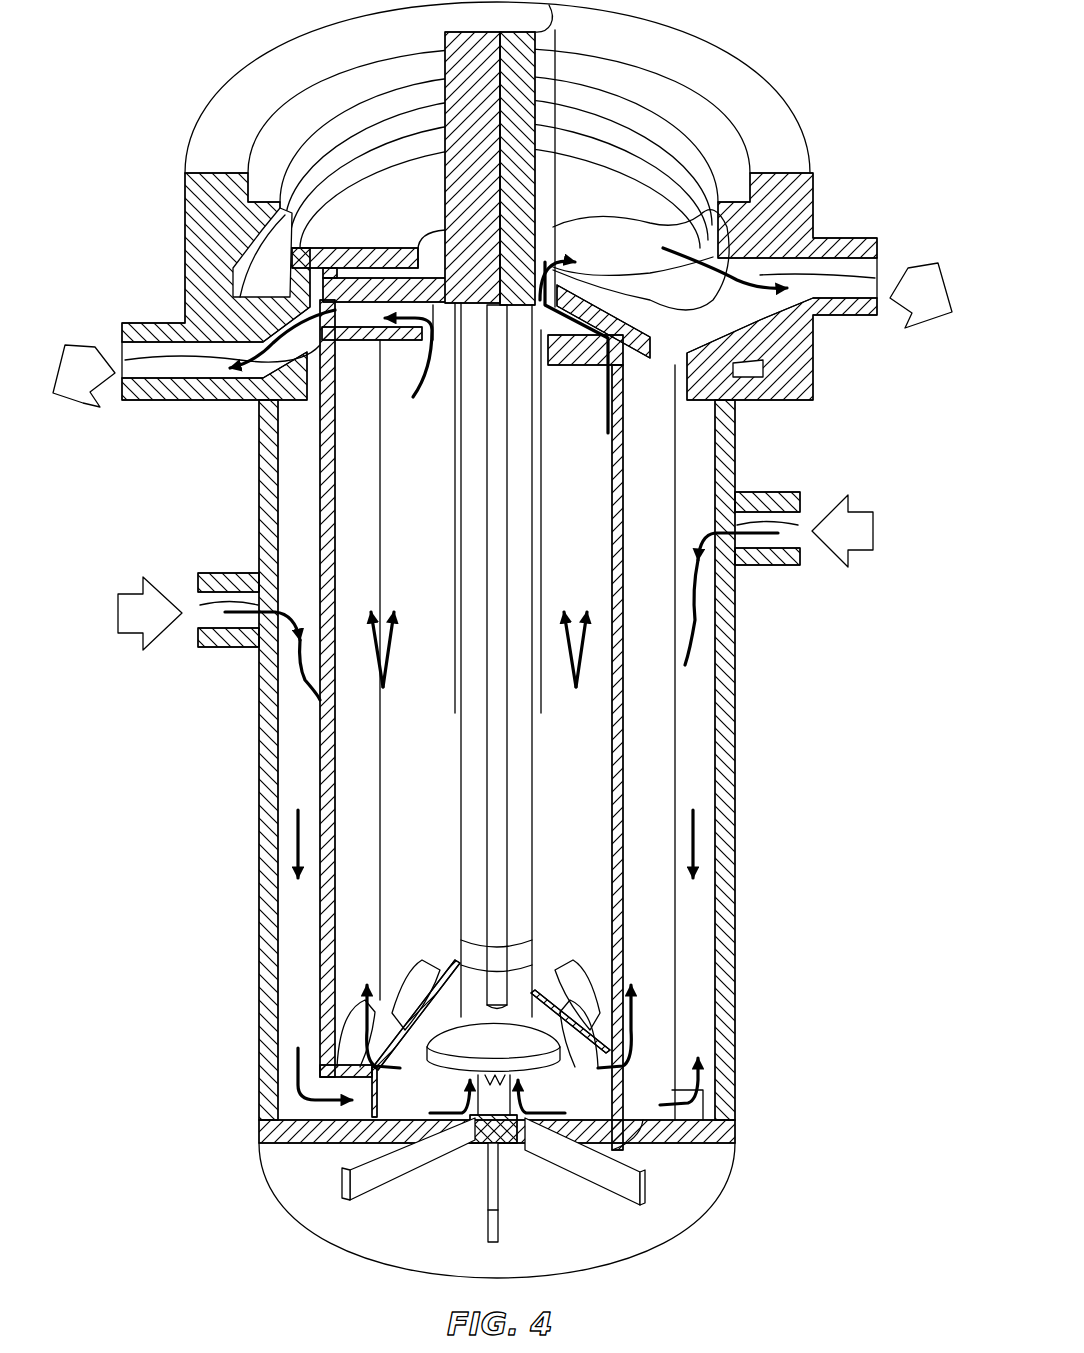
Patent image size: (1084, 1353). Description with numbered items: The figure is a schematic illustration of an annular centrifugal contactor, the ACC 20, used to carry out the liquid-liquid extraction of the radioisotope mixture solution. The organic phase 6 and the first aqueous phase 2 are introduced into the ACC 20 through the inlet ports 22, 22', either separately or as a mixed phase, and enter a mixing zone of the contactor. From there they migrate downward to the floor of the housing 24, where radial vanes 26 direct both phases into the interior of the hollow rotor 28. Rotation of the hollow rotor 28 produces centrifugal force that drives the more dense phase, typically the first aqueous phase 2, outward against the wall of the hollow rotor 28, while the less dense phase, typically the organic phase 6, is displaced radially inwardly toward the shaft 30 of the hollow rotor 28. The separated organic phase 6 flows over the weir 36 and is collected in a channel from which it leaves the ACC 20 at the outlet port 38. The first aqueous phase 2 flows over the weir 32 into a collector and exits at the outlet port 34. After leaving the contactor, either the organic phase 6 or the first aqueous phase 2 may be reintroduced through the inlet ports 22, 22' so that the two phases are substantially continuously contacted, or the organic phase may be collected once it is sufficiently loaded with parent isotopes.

The annular centrifugal contactor 20 is at (845, 82).
The inlet port 22 is at (228, 650).
The inlet port 22' is at (779, 586).
The housing 24 is at (258, 930).
The radial vanes 26 is at (640, 1182).
The hollow rotor 28 is at (510, 1022).
The shaft 30 is at (500, 791).
The weir 32 is at (785, 345).
The outlet port 34 is at (848, 272).
The weir 36 is at (415, 335).
The outlet port 38 is at (172, 372).
The first aqueous phase 2 is at (122, 613).
The organic phase 6 is at (876, 531).